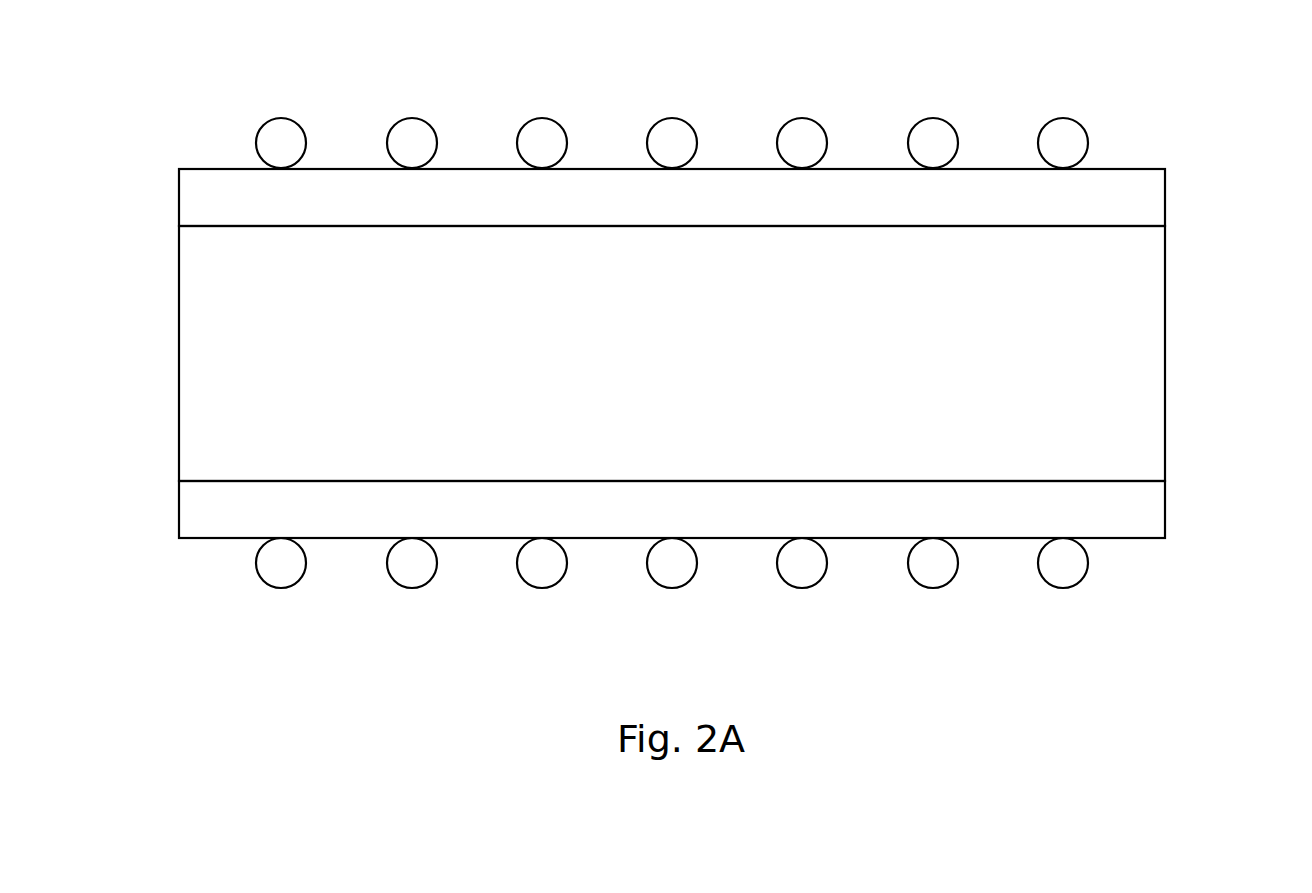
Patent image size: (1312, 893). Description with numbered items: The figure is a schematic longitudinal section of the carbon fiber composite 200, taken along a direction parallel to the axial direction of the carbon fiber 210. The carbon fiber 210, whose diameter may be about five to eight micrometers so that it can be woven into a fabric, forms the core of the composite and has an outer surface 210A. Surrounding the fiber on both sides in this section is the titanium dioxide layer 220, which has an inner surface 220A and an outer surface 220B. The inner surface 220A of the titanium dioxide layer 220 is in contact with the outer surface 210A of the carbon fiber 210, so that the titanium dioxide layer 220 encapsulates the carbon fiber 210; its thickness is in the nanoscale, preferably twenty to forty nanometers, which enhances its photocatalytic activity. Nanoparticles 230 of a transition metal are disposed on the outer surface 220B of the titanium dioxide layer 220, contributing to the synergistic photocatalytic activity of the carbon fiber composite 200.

The carbon fiber composite 200 is at (124, 61).
The carbon fiber 210 is at (197, 371).
The outer surface of the carbon fiber 210A is at (1063, 226).
The titanium dioxide layer 220 is at (197, 200).
The inner surface of the titanium dioxide layer 220A is at (1127, 226).
The outer surface of the titanium dioxide layer 220B is at (1133, 169).
The nanoparticles of a transition metal 230 is at (541, 133).